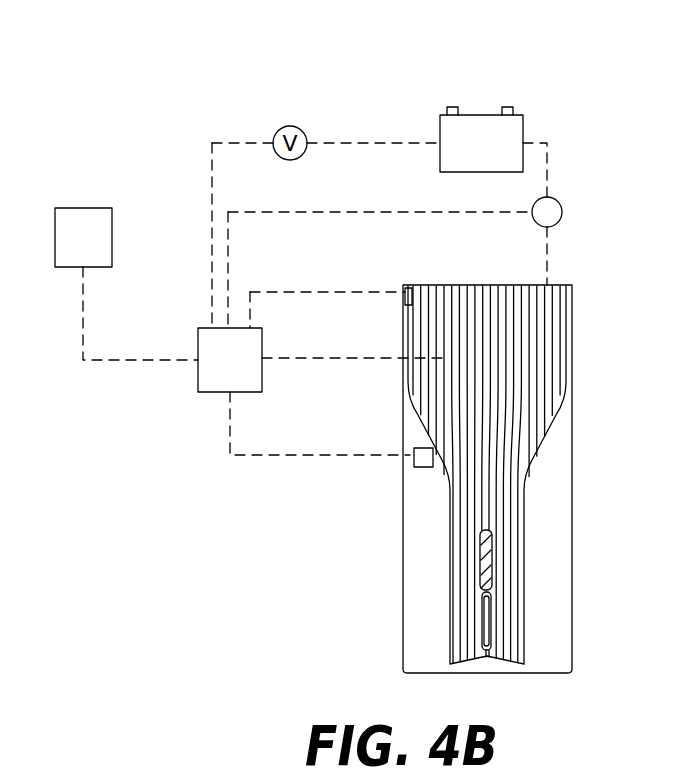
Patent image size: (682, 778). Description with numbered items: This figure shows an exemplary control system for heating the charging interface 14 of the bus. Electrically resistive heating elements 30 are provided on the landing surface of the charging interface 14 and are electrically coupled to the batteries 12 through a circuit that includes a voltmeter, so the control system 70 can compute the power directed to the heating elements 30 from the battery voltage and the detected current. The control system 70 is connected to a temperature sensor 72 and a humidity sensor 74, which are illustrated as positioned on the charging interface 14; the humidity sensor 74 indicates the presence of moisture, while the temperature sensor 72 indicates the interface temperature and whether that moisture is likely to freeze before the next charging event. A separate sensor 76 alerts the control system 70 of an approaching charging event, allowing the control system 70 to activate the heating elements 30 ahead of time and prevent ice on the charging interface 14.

The batteries 12 is at (468, 157).
The charging interface 14 is at (614, 459).
The heating elements 30 is at (532, 352).
The control system 70 is at (218, 373).
The temperature sensor 72 is at (409, 286).
The humidity sensor 74 is at (417, 468).
The sensor 76 is at (71, 251).